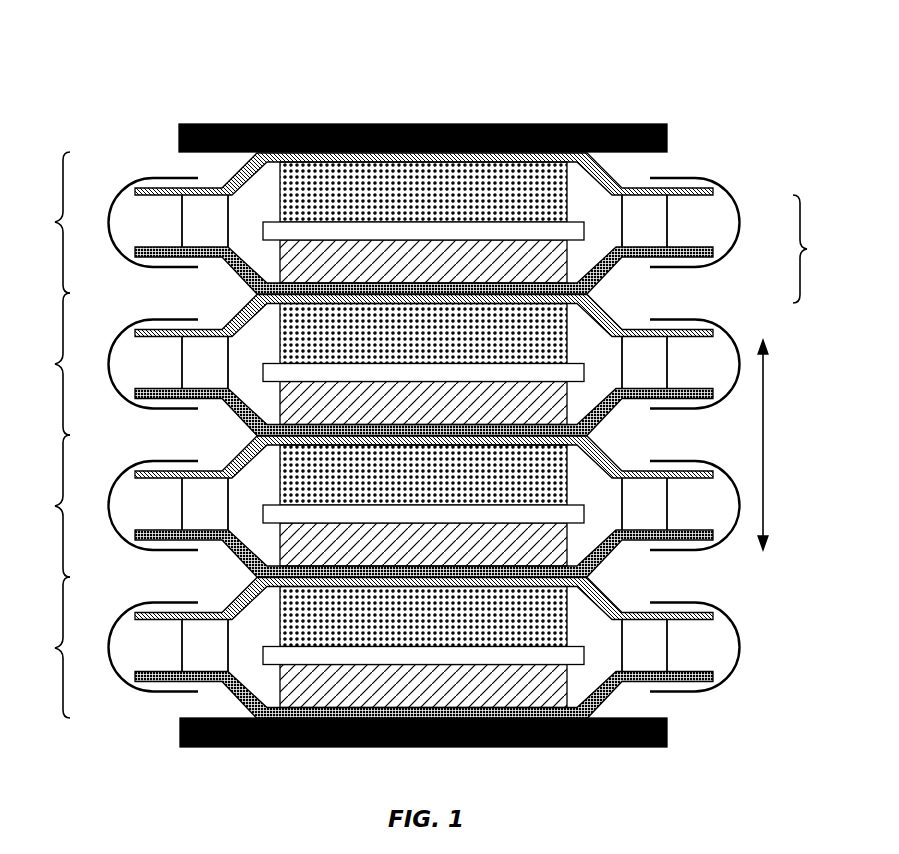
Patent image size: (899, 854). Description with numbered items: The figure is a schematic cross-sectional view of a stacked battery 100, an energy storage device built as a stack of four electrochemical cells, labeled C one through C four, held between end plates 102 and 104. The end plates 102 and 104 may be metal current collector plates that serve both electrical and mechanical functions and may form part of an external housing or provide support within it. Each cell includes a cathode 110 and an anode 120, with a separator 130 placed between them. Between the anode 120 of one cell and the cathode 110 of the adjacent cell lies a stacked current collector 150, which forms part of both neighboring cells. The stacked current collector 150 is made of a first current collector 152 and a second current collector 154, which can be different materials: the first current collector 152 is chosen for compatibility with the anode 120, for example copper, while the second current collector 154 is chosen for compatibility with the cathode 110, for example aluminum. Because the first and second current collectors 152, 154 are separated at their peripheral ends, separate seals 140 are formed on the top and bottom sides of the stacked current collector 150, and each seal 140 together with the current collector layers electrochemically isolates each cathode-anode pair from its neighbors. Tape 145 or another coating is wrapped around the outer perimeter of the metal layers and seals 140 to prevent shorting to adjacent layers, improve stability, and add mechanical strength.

The stacked battery 100 is at (280, 66).
The end plate 102 is at (545, 123).
The end plate 104 is at (297, 747).
The cathode 110 is at (278, 182).
The anode 120 is at (257, 285).
The separator 130 is at (263, 657).
The seal 140 is at (667, 230).
The tape 145 is at (722, 196).
The stacked current collector 150 is at (818, 249).
The first current collector 152 is at (740, 221).
The second current collector 154 is at (717, 330).